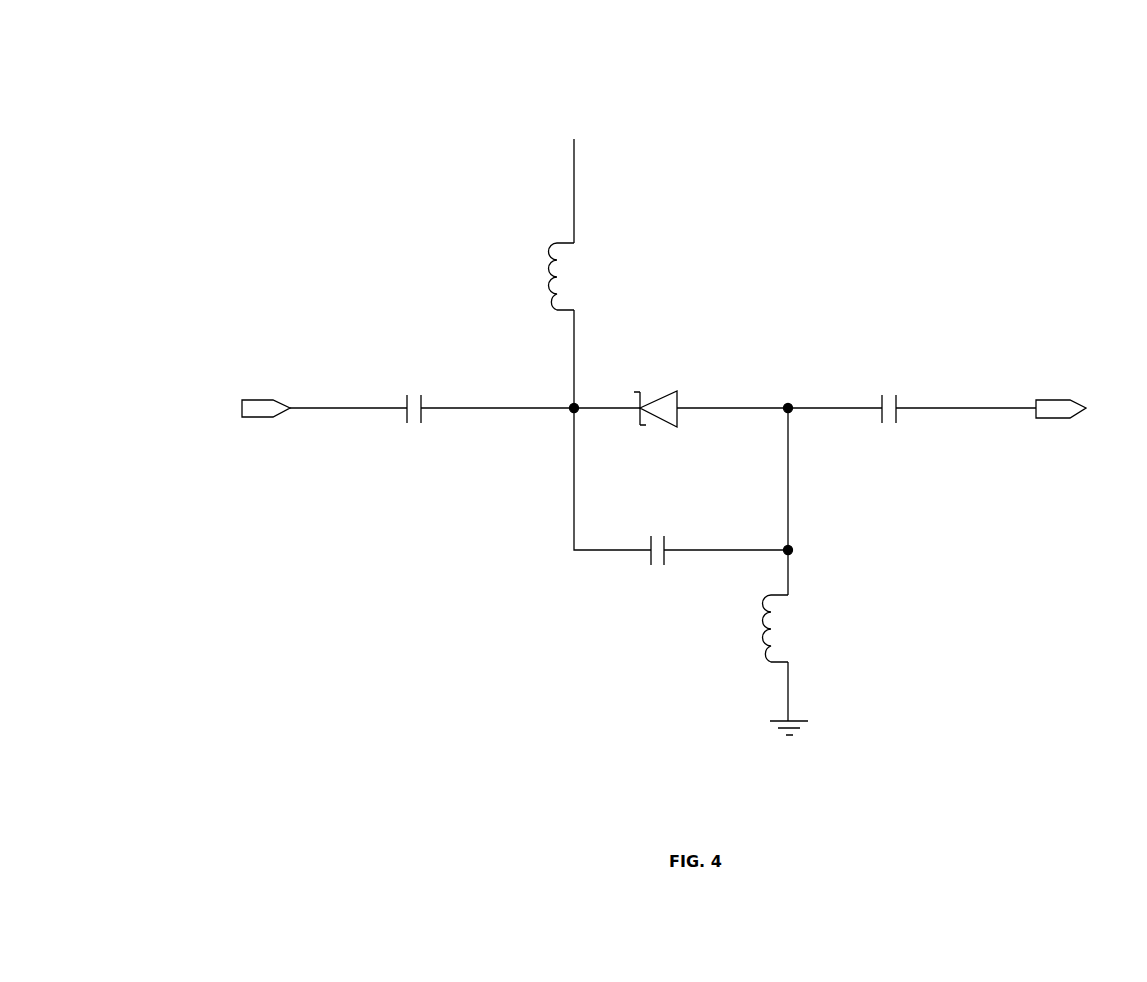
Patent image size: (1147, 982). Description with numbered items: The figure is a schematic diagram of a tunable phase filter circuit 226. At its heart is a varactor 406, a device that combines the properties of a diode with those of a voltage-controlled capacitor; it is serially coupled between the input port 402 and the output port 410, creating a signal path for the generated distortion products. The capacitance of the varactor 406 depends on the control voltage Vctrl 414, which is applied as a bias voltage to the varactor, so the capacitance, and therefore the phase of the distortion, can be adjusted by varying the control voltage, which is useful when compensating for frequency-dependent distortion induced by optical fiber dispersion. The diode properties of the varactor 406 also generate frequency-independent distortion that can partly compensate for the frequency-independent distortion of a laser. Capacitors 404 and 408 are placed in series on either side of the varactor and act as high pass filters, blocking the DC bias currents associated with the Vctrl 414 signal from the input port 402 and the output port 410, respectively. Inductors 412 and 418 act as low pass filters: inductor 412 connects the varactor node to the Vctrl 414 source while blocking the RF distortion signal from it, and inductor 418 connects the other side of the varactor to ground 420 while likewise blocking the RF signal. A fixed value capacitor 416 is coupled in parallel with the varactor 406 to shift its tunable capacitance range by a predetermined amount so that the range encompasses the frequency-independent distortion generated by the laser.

The tunable phase filter circuit 226 is at (392, 107).
The input port 402 is at (255, 418).
The capacitor 404 is at (405, 416).
The varactor 406 is at (678, 398).
The capacitor 408 is at (898, 399).
The output port 410 is at (1052, 418).
The inductor 412 is at (550, 285).
The Vctrl 414 is at (595, 124).
The fixed value capacitor 416 is at (649, 559).
The inductor 418 is at (770, 645).
The ground 420 is at (762, 721).